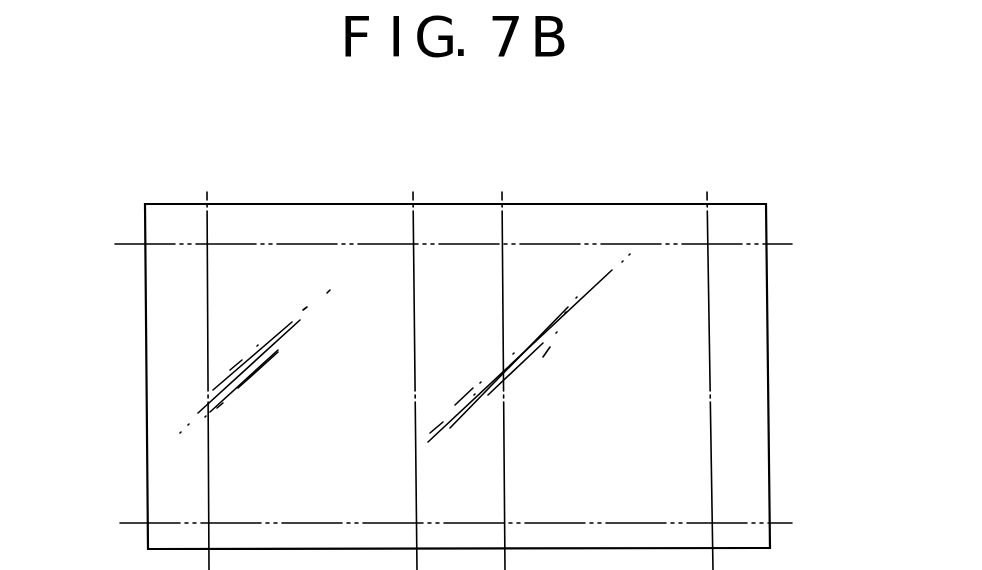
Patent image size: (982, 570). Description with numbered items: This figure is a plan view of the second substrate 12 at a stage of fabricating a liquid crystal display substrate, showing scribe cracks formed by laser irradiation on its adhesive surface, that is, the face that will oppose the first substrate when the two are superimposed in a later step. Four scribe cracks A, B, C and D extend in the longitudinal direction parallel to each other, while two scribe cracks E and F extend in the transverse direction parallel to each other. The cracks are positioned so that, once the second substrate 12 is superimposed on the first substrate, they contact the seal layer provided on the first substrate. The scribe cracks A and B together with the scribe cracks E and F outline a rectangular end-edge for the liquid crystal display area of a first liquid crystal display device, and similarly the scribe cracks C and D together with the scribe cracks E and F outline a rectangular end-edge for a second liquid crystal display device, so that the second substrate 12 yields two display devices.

The second substrate 12 is at (587, 181).
The scribe crack A is at (207, 365).
The scribe crack B is at (412, 365).
The scribe crack C is at (496, 365).
The scribe crack D is at (705, 365).
The scribe crack E is at (437, 244).
The scribe crack F is at (444, 524).